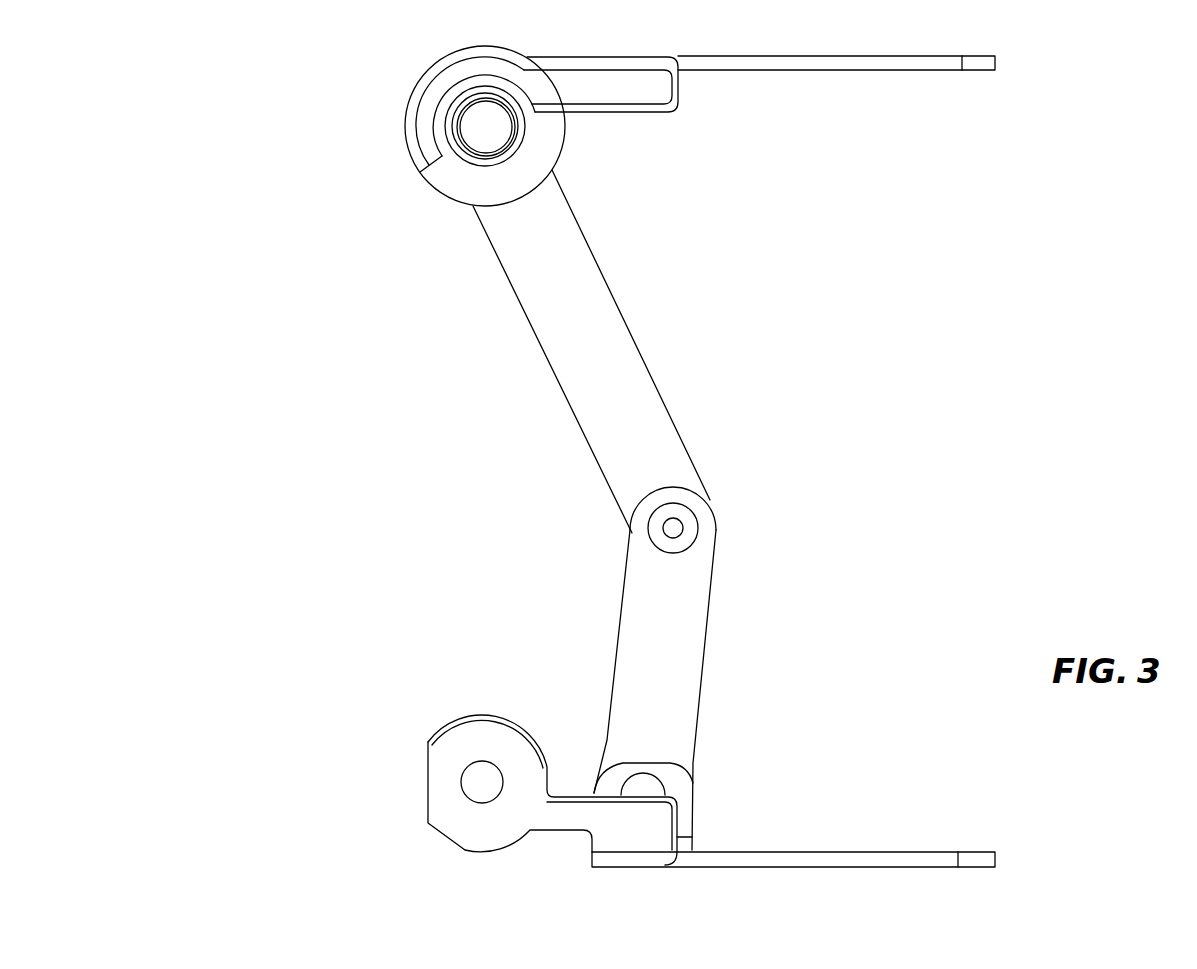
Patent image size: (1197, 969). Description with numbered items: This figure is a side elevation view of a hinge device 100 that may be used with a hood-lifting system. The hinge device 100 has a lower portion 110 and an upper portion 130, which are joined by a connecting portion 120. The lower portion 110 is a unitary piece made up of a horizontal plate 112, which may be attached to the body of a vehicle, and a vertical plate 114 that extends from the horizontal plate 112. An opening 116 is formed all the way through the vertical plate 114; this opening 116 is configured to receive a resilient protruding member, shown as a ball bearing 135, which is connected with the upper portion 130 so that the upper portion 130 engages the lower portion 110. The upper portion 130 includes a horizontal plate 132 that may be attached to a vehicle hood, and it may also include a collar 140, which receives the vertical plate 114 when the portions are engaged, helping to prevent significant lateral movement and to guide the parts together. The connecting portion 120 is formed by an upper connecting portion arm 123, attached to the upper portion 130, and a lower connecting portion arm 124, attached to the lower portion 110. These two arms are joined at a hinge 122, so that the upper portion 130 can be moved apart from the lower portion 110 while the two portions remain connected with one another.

The hinge device 100 is at (298, 408).
The lower portion 110 is at (740, 877).
The horizontal plate 112 is at (878, 857).
The vertical plate 114 is at (443, 810).
The opening 116 is at (455, 771).
The connecting portion 120 is at (751, 193).
The hinge 122 is at (699, 509).
The upper connecting portion arm 123 is at (615, 347).
The lower connecting portion arm 124 is at (682, 647).
The upper portion 130 is at (567, 43).
The horizontal plate 132 is at (857, 62).
The ball bearing 135 is at (485, 126).
The collar 140 is at (415, 98).